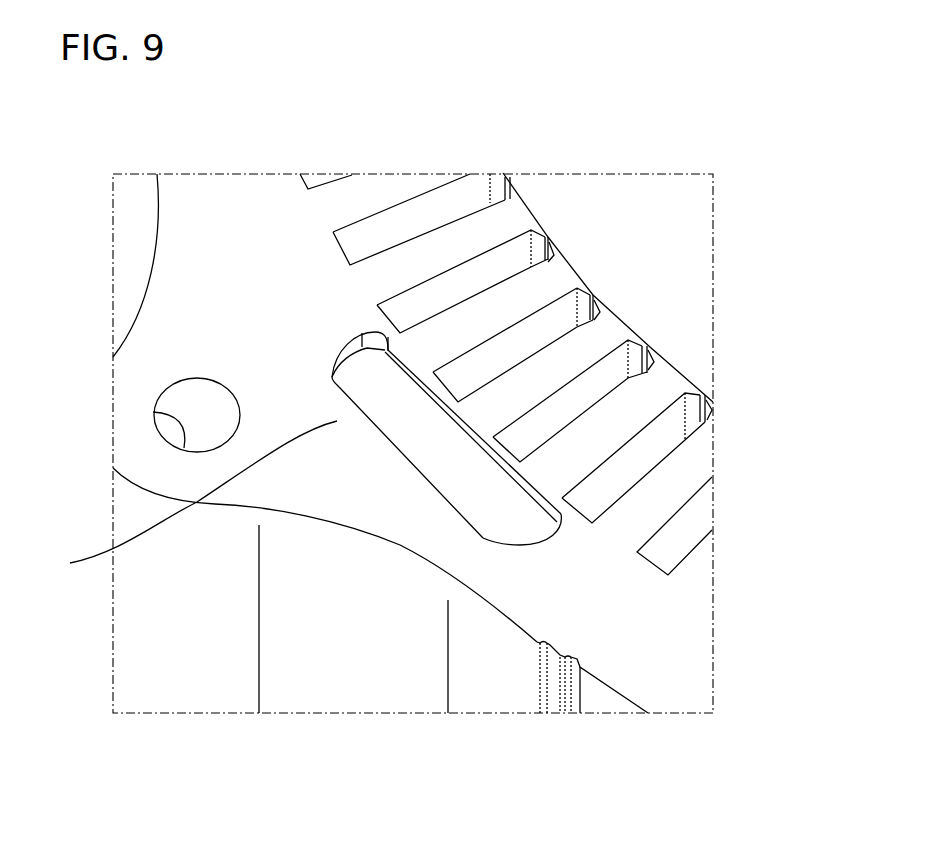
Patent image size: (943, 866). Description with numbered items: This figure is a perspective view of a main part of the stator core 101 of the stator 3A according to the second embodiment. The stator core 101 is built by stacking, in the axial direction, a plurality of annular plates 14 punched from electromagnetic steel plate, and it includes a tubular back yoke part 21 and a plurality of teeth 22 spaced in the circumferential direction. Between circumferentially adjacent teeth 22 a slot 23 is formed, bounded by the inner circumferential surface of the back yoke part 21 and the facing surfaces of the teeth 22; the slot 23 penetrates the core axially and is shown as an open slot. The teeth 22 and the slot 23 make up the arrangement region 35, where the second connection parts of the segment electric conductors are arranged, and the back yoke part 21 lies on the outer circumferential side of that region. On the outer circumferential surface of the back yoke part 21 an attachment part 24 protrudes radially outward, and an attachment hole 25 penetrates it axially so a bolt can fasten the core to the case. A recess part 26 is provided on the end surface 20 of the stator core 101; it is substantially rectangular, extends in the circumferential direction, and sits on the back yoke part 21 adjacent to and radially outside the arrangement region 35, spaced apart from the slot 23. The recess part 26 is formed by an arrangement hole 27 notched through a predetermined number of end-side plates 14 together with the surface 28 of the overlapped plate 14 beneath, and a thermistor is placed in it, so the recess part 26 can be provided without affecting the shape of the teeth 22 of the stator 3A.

The stator 3A is at (341, 172).
The plate 14 is at (607, 693).
The end surface 20 is at (302, 490).
The back yoke part 21 is at (188, 501).
The teeth 22 is at (545, 283).
The slot 23 is at (565, 320).
The attachment part 24 is at (145, 470).
The attachment hole 25 is at (153, 412).
The recess part 26 is at (492, 783).
The arrangement hole 27 is at (460, 492).
The surface 28 is at (502, 525).
The arrangement region 35 is at (782, 210).
The stator core 101 is at (338, 614).